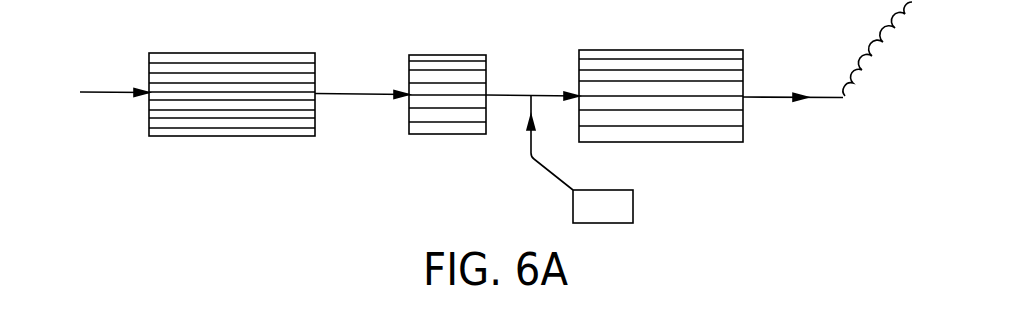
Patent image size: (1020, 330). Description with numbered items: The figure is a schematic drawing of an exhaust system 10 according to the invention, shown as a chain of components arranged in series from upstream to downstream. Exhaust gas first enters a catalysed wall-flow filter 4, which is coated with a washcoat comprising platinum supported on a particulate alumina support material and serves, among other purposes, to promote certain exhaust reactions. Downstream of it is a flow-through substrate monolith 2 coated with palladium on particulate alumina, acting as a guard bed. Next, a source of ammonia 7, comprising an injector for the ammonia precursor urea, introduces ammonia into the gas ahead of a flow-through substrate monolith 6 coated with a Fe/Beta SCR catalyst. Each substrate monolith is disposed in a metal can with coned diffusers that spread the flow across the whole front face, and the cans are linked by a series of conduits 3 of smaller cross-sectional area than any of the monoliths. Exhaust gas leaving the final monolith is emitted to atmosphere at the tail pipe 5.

The flow-through substrate monolith 2 is at (449, 140).
The conduits 3 is at (108, 93).
The catalysed wall-flow filter 4 is at (255, 141).
The tail pipe 5 is at (848, 118).
The flow-through substrate monolith 6 is at (663, 148).
The source of ammonia 7 is at (549, 184).
The exhaust system 10 is at (546, 60).